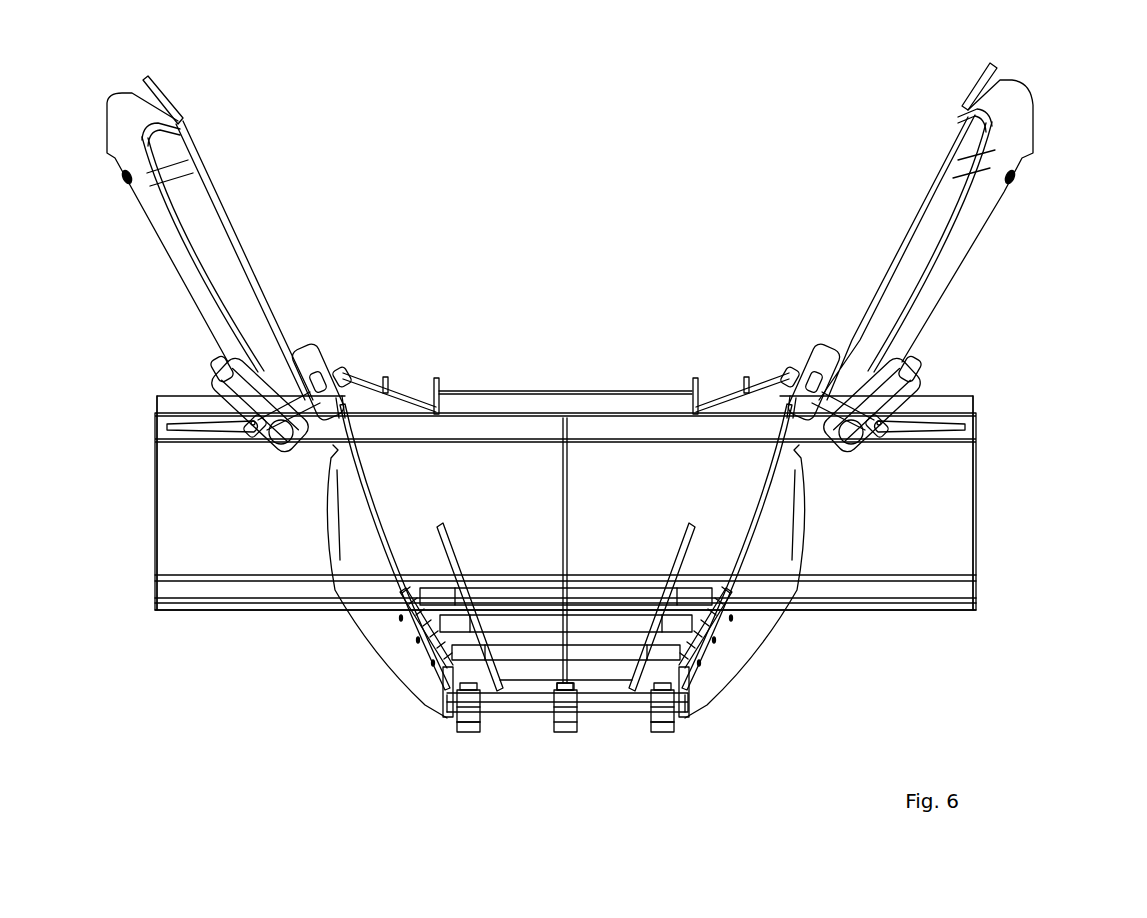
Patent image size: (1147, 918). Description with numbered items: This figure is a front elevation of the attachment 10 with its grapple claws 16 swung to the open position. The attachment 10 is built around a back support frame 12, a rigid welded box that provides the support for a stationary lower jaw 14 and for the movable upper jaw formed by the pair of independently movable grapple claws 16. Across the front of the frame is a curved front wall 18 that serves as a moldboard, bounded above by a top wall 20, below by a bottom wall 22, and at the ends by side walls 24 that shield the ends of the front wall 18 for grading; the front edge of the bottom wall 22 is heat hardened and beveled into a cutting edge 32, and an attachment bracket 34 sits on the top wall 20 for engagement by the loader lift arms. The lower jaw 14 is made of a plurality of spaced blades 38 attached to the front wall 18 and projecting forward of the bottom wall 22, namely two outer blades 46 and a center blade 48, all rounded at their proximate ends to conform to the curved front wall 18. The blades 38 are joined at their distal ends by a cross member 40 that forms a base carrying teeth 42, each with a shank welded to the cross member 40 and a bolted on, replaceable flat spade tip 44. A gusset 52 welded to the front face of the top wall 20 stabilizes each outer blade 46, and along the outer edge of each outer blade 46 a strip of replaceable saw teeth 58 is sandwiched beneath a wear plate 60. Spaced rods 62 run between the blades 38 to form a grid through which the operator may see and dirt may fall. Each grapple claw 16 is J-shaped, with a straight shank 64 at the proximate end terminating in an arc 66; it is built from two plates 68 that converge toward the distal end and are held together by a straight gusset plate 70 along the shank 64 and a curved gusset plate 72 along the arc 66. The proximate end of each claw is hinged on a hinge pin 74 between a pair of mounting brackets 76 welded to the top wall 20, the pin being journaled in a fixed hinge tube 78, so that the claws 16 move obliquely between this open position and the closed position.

The attachment 10 is at (1050, 252).
The back support frame 12 is at (978, 463).
The stationary lower jaw 14 is at (567, 591).
The grapple claws 16 is at (167, 253).
The curved front wall 18 is at (232, 523).
The top wall 20 is at (545, 405).
The bottom wall 22 is at (936, 593).
The side walls 24 is at (156, 530).
The cutting edge 32 is at (853, 600).
The attachment bracket 34 is at (648, 393).
The blades 38 is at (362, 497).
The cross member 40 is at (522, 700).
The teeth 42 is at (466, 740).
The flat spade tip 44 is at (474, 733).
The outer blades 46 is at (358, 528).
The center blade 48 is at (567, 547).
The gusset 52 is at (352, 402).
The strip of replaceable saw teeth 58 is at (412, 623).
The wear plate 60 is at (423, 686).
The rods 62 is at (525, 647).
The straight shank 64 is at (257, 266).
The arc 66 is at (123, 92).
The plates 68 is at (237, 233).
The straight gusset plate 70 is at (252, 311).
The curved gusset plate 72 is at (172, 133).
The hinge pin 74 is at (256, 432).
The mounting brackets 76 is at (318, 350).
The fixed hinge tube 78 is at (265, 442).